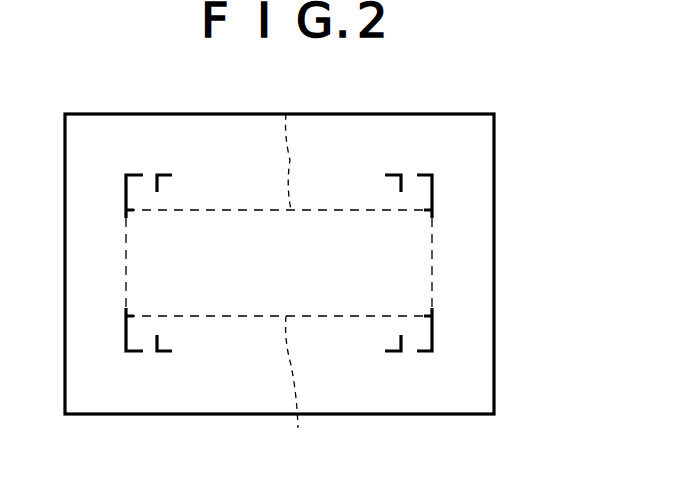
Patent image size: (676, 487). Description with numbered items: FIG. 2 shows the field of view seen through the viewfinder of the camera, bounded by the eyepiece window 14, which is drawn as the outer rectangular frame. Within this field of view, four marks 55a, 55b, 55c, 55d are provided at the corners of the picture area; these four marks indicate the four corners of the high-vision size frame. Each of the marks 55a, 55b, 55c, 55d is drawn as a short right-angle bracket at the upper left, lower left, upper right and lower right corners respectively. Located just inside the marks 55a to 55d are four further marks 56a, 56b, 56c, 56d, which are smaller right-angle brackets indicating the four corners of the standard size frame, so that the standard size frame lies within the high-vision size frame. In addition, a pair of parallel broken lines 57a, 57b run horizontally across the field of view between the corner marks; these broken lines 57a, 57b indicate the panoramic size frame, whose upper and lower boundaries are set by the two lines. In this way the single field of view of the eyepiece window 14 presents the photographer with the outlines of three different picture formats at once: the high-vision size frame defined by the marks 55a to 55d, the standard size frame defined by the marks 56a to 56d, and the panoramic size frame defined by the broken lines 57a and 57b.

The eyepiece window 14 is at (481, 236).
The mark 55a is at (137, 173).
The mark 55b is at (135, 353).
The mark 55c is at (431, 173).
The mark 55d is at (426, 353).
The mark 56a is at (166, 173).
The mark 56b is at (160, 353).
The mark 56c is at (397, 173).
The mark 56d is at (391, 353).
The broken line 57a is at (286, 114).
The broken line 57b is at (288, 388).